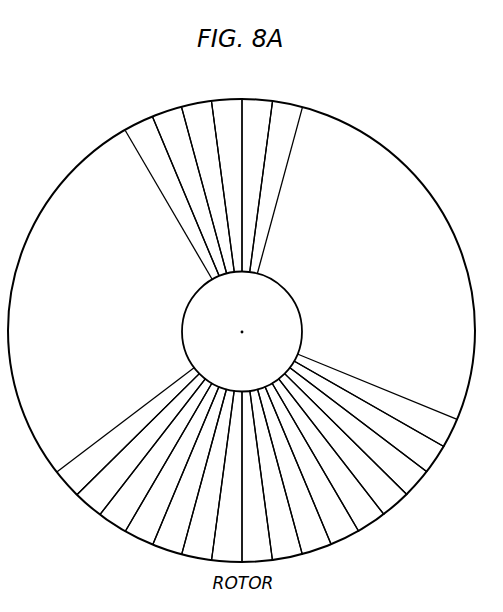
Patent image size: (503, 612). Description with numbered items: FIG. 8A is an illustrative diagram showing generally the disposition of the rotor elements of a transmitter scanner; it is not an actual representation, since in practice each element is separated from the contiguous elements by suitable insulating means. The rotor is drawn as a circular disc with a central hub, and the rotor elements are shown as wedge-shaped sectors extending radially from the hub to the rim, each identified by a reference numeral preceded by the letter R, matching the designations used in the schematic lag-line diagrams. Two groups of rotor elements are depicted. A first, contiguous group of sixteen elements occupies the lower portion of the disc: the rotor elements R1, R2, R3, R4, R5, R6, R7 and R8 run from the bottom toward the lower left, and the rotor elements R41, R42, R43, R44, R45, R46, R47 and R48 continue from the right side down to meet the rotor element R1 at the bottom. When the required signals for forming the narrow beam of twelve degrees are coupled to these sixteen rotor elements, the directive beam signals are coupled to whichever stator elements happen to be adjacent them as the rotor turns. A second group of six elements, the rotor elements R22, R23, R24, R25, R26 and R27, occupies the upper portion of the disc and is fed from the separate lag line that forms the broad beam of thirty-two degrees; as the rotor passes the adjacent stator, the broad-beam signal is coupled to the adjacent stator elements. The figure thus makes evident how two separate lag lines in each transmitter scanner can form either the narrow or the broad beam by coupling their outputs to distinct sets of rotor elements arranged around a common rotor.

The rotor element R1 is at (257, 477).
The rotor element R2 is at (227, 477).
The rotor element R3 is at (208, 475).
The rotor element R4 is at (190, 470).
The rotor element R5 is at (172, 464).
The rotor element R6 is at (156, 455).
The rotor element R7 is at (141, 443).
The rotor element R8 is at (128, 431).
The rotor element R22 is at (172, 198).
The rotor element R23 is at (190, 191).
The rotor element R24 is at (208, 188).
The rotor element R25 is at (227, 186).
The rotor element R26 is at (257, 186).
The rotor element R27 is at (276, 188).
The rotor element R41 is at (376, 400).
The rotor element R42 is at (367, 416).
The rotor element R43 is at (355, 431).
The rotor element R44 is at (343, 443).
The rotor element R45 is at (328, 455).
The rotor element R46 is at (312, 464).
The rotor element R47 is at (295, 470).
The rotor element R48 is at (276, 475).